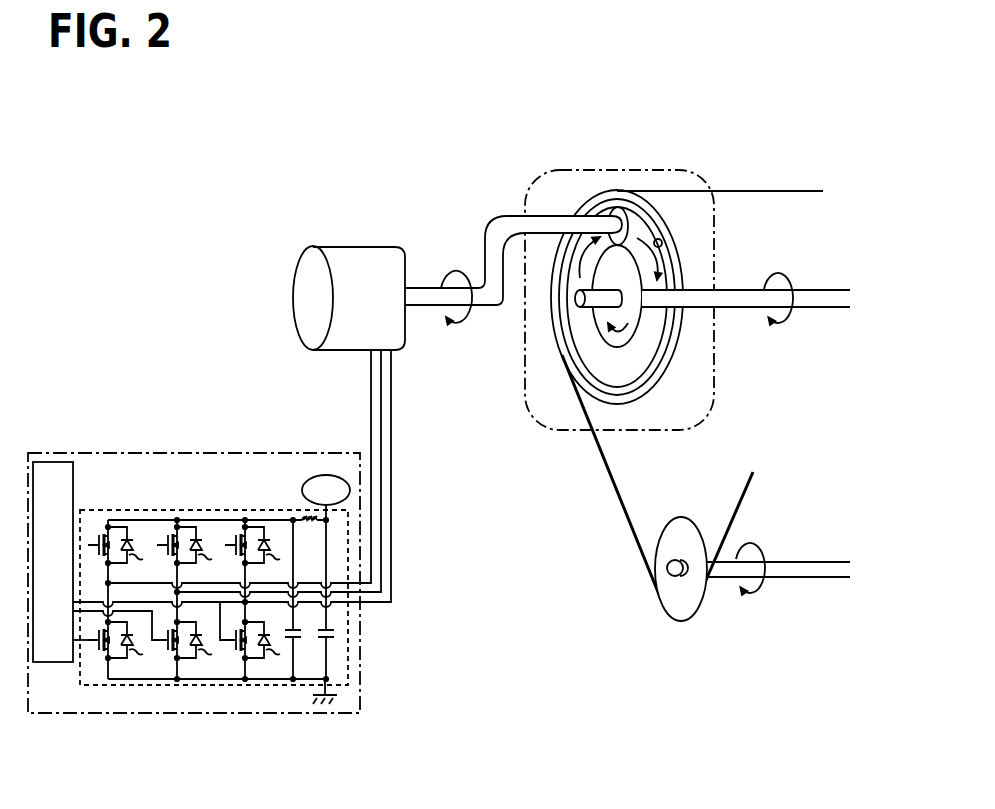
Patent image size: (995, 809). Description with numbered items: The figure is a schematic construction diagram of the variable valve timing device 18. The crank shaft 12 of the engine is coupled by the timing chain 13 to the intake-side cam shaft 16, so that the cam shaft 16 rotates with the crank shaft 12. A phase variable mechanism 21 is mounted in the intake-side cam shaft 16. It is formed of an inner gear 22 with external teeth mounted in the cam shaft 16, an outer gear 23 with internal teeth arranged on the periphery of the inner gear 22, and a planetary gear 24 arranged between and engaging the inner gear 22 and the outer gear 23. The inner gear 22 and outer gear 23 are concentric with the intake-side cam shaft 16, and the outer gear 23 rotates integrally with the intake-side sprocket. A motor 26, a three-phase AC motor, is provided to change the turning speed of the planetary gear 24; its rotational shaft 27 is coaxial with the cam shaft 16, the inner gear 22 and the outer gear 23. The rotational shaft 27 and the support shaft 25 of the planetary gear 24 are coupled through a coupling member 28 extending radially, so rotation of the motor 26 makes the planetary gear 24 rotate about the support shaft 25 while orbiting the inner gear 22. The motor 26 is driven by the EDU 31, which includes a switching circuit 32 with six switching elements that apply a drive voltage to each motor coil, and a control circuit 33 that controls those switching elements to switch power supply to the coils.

The crank shaft 12 is at (804, 562).
The timing chain 13 is at (618, 484).
The intake-side cam shaft 16 is at (820, 290).
The variable valve timing device 18 is at (513, 226).
The phase variable mechanism 21 is at (668, 170).
The inner gear 22 is at (645, 315).
The outer gear 23 is at (663, 245).
The planetary gear 24 is at (632, 225).
The support shaft 25 is at (560, 215).
The motor 26 is at (377, 247).
The rotational shaft 27 is at (427, 288).
The coupling member 28 is at (484, 255).
The EDU 31 is at (360, 643).
The switching circuit 32 is at (348, 616).
The control circuit 33 is at (62, 662).